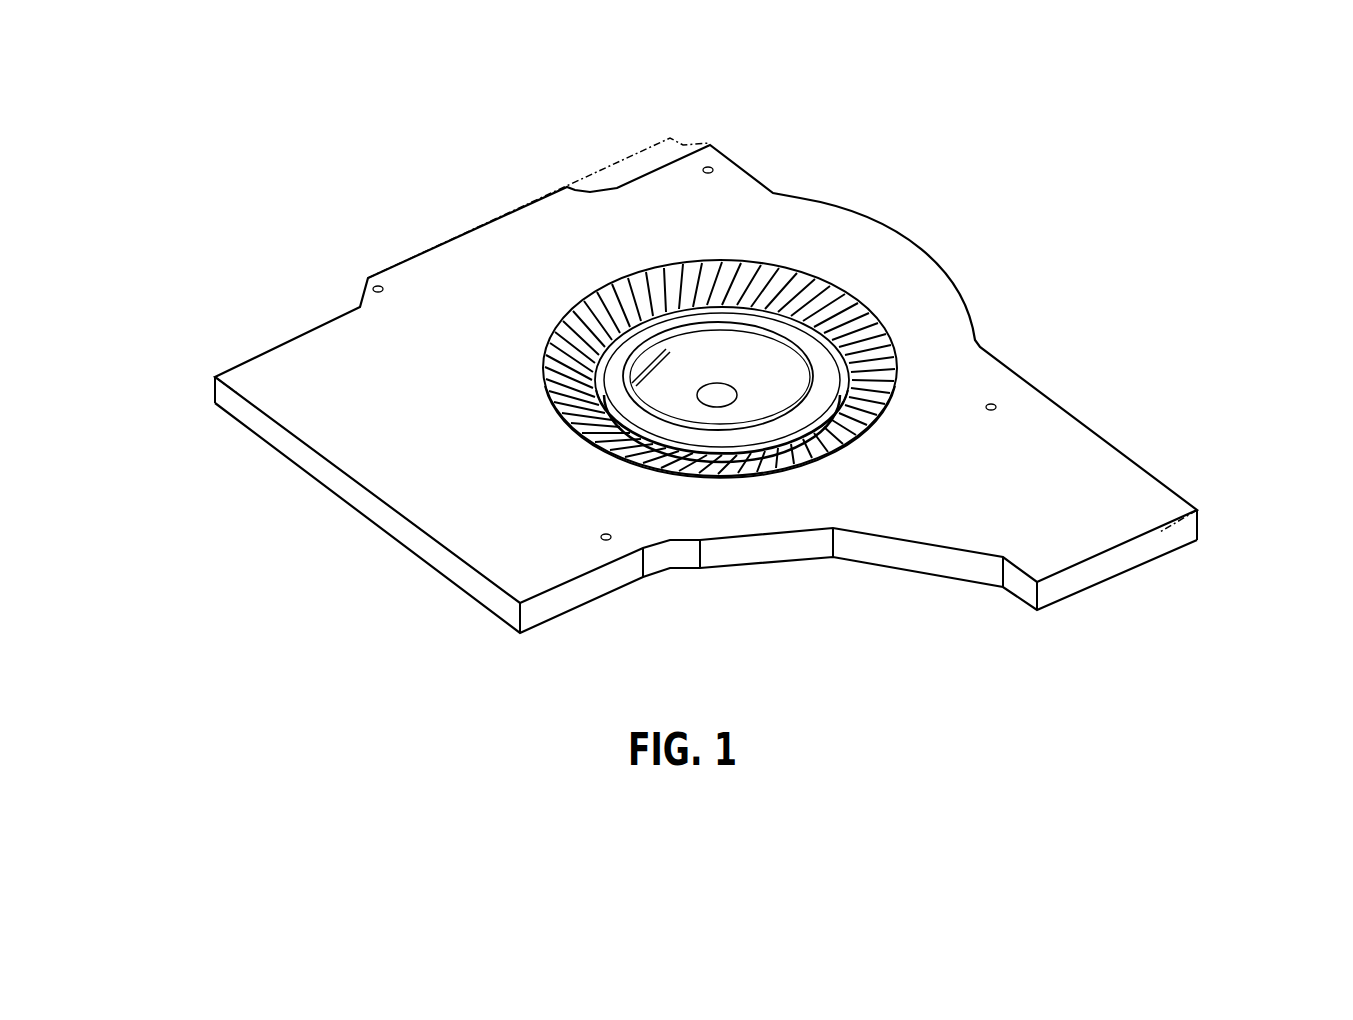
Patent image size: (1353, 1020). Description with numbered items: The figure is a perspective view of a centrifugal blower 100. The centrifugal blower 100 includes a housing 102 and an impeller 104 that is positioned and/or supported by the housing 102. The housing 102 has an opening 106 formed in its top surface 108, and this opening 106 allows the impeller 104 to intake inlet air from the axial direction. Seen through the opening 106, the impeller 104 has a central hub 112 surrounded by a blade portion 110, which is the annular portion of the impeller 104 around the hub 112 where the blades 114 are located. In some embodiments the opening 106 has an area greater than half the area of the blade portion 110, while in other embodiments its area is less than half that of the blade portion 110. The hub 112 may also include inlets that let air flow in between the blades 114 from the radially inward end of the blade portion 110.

The centrifugal blower 100 is at (1038, 154).
The housing 102 is at (1027, 470).
The impeller 104 is at (556, 371).
The opening 106 is at (500, 280).
The top surface 108 is at (706, 374).
The blade portion 110 is at (781, 291).
The hub 112 is at (722, 318).
The blades 114 is at (857, 348).